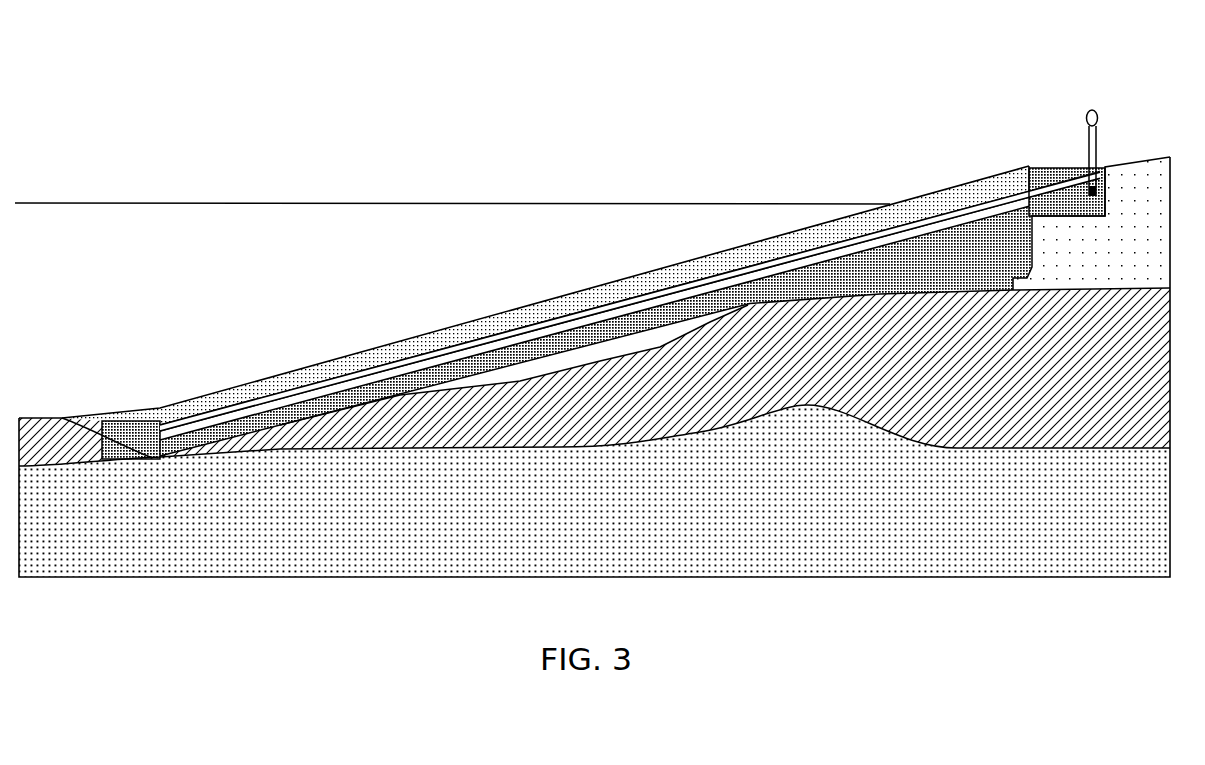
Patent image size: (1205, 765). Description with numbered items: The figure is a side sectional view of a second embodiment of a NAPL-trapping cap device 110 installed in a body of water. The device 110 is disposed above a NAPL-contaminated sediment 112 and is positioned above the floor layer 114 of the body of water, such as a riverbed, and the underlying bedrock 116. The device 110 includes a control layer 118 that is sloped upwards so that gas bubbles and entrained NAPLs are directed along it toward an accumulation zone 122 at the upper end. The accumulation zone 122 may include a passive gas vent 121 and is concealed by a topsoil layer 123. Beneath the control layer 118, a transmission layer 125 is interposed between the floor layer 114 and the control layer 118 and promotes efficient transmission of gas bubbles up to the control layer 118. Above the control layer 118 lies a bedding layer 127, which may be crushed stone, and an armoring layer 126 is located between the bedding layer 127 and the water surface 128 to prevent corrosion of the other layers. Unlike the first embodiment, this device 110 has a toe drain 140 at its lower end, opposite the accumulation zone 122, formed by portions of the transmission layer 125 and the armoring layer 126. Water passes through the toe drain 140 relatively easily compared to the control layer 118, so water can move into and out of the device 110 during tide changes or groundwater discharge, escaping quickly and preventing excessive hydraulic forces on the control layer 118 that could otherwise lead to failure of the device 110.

The NAPL-trapping device 110 is at (268, 99).
The NAPL-contaminated sediment 112 is at (615, 348).
The floor layer 114 is at (886, 371).
The bedrock 116 is at (744, 511).
The control layer 118 is at (350, 387).
The passive gas vent 121 is at (1085, 116).
The accumulation zone 122 is at (1057, 192).
The topsoil layer 123 is at (1043, 167).
The transmission layer 125 is at (964, 271).
The armoring layer 126 is at (547, 302).
The bedding layer 127 is at (407, 358).
The water surface 128 is at (600, 203).
The toe drain 140 is at (93, 409).